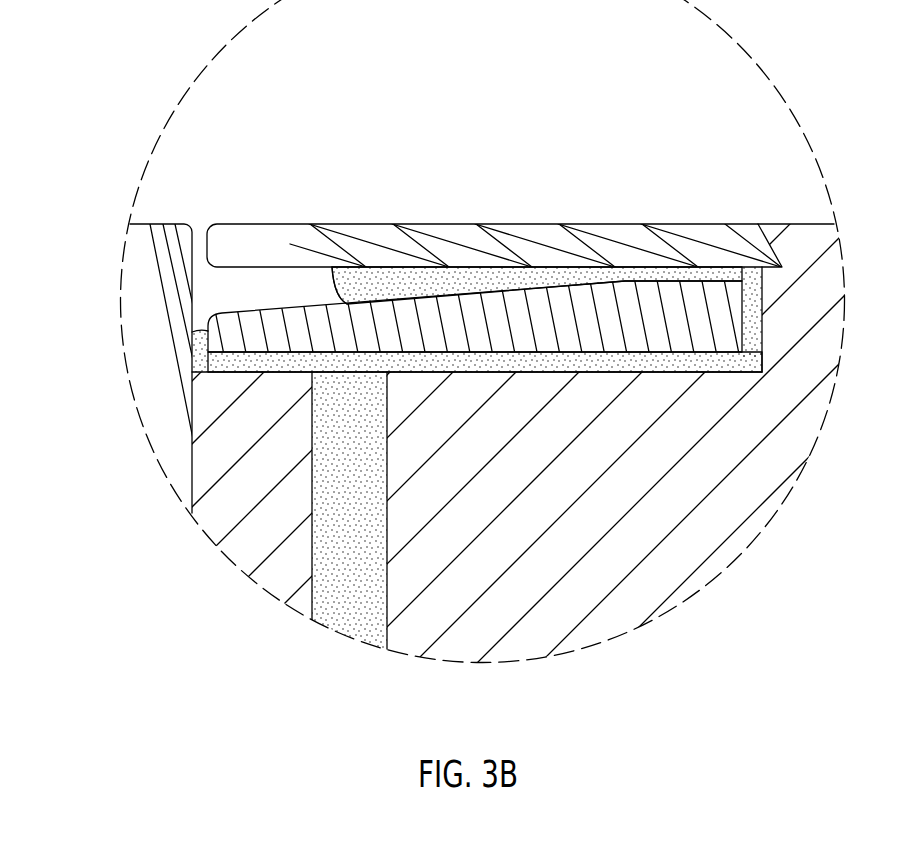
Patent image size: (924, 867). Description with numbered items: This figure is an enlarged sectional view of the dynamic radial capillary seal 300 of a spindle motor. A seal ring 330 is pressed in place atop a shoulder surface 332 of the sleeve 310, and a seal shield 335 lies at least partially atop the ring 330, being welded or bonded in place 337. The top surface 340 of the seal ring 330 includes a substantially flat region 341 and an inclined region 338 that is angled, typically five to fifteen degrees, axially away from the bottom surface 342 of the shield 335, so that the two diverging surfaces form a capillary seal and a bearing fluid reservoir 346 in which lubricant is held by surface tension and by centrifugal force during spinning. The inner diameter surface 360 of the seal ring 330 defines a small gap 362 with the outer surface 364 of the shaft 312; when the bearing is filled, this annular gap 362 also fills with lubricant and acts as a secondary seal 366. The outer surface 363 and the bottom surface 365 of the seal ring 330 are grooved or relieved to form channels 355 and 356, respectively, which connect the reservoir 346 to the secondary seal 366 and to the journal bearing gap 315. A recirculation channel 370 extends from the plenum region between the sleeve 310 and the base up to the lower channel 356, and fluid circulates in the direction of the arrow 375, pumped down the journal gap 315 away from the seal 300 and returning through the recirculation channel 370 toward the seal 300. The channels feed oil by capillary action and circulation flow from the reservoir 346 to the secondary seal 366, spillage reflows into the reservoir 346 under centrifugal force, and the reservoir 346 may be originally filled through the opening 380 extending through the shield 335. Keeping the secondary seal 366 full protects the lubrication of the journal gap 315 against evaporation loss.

The dynamic radial capillary seal 300 is at (326, 285).
The sleeve 310 is at (768, 482).
The shaft 312 is at (157, 416).
The journal bearing gap 315 is at (192, 487).
The seal ring 330 is at (718, 317).
The shoulder surface 332 is at (710, 375).
The seal shield 335 is at (657, 242).
The welded or bonded place 337 is at (780, 240).
The inclined region of top surface 338 is at (463, 290).
The top surface of seal ring 340 is at (603, 286).
The substantially flat region 341 is at (699, 280).
The bottom surface of shield 342 is at (391, 240).
The bearing fluid reservoir 346 is at (434, 267).
The channel 355 is at (753, 340).
The channel 356 is at (660, 360).
The inner diameter surface 360 is at (214, 340).
The small gap 362 is at (192, 345).
The outer surface of seal ring 363 is at (763, 289).
The outer surface of shaft 364 is at (193, 306).
The bottom surface of seal ring 365 is at (543, 352).
The secondary seal 366 is at (202, 306).
The recirculation channel 370 is at (358, 527).
The arrow 375 is at (295, 438).
The opening 380 is at (283, 237).